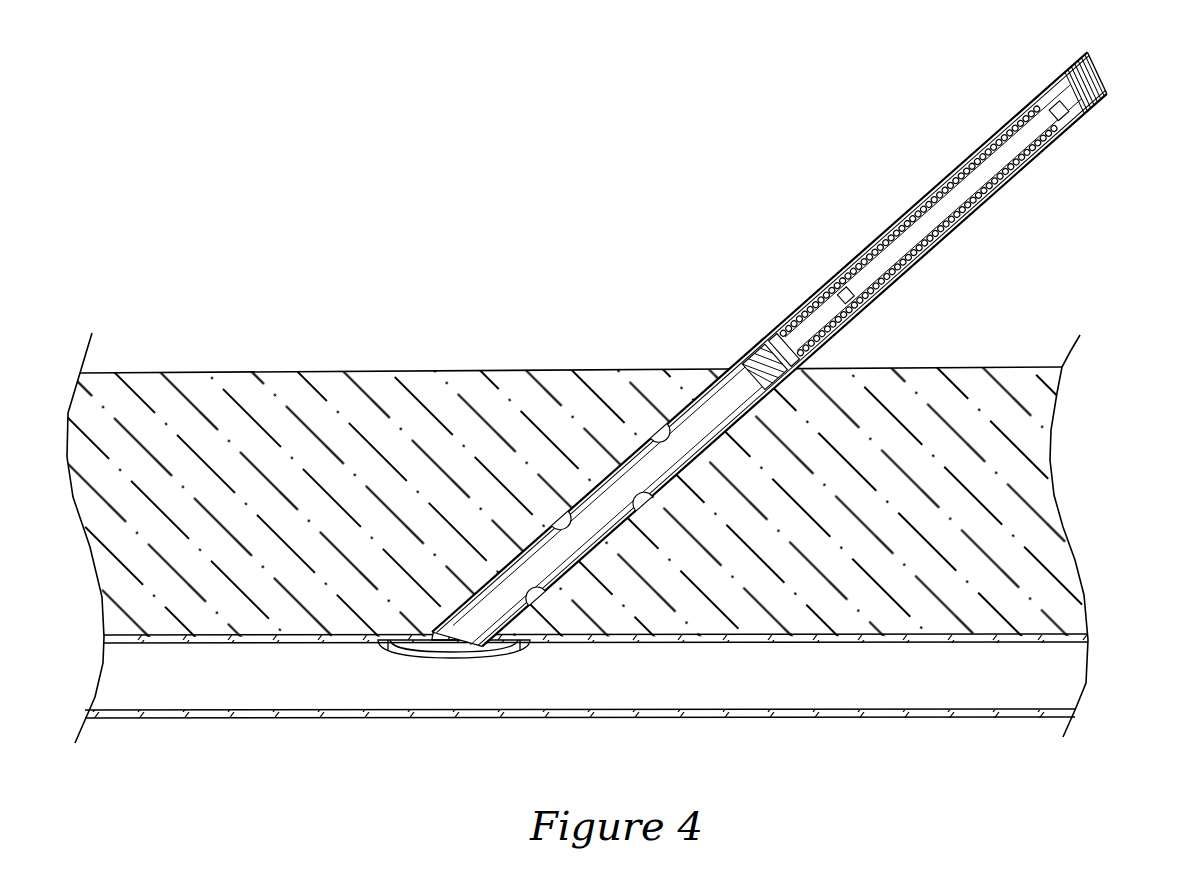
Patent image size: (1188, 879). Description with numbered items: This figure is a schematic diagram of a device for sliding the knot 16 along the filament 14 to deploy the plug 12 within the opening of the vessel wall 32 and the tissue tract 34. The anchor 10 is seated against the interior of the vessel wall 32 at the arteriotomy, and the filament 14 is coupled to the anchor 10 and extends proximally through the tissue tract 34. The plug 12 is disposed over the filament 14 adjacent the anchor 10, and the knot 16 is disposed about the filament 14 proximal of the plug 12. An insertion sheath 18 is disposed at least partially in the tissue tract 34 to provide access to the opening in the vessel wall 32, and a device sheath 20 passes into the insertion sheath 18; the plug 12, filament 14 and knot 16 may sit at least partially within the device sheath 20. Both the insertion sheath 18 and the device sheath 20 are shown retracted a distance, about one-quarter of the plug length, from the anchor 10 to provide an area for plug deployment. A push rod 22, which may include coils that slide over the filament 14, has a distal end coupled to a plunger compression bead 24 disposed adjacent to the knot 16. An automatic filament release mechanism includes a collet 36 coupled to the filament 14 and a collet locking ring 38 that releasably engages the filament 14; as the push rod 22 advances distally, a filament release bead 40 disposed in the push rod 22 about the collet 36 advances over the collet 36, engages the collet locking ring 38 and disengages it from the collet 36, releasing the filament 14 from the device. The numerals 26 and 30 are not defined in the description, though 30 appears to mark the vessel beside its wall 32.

The anchor 10 is at (427, 648).
The plug 12 is at (537, 543).
The filament 14 is at (837, 310).
The knot 16 is at (767, 357).
The insertion sheath 18 is at (891, 292).
The device sheath 20 is at (827, 341).
The push rod 22 is at (900, 237).
The plunger compression bead 24 is at (790, 337).
The tissue anchors 26 is at (667, 443).
The blood vessel 30 is at (1050, 683).
The vessel wall 32 is at (1027, 633).
The tissue tract 34 is at (603, 460).
The collet 36 is at (980, 187).
The collet locking ring 38 is at (857, 290).
The filament release bead 40 is at (1063, 107).